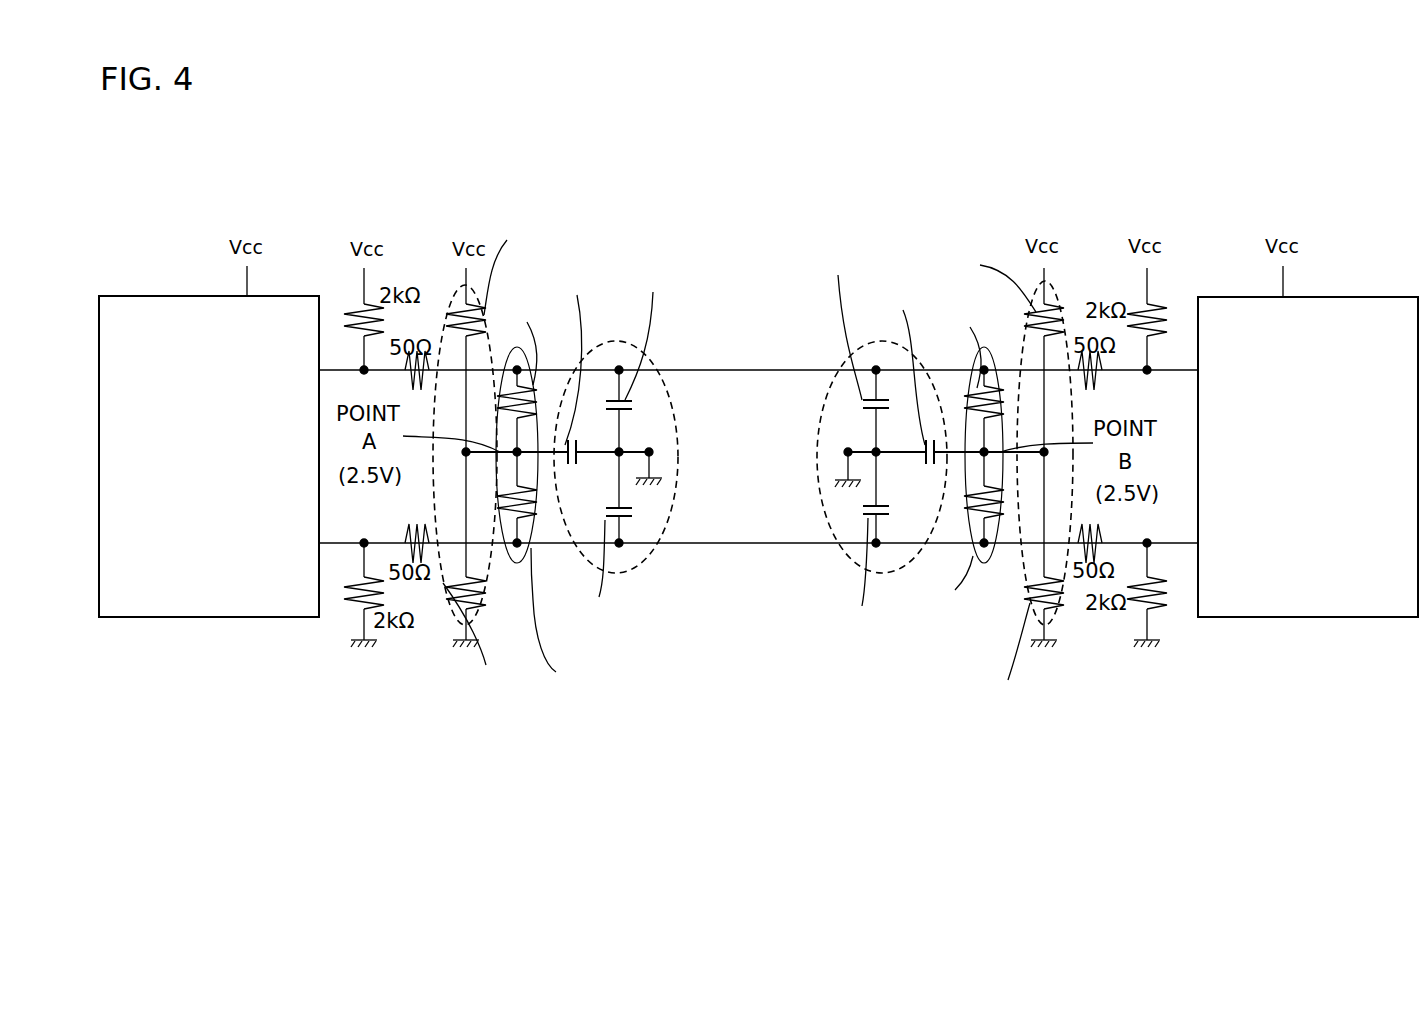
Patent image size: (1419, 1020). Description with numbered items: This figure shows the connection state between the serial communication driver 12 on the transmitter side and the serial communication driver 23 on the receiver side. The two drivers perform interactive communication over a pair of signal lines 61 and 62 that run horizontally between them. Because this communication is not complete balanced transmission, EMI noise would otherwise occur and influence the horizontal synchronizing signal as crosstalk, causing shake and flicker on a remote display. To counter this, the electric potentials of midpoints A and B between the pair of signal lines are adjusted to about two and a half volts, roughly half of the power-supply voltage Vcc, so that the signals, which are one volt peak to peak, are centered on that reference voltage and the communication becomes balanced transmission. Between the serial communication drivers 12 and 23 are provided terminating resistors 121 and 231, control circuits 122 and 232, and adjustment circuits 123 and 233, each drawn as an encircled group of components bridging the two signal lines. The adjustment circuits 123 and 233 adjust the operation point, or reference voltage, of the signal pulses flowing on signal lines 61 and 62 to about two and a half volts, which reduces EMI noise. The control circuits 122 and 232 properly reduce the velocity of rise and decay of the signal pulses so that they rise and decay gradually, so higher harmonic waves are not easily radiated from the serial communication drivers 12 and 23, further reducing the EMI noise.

The serial communication driver 12 is at (227, 617).
The serial communication driver 23 is at (1268, 617).
The signal line 61 is at (748, 370).
The signal line 62 is at (748, 543).
The terminating resistor 121 is at (513, 562).
The control circuit 122 is at (653, 548).
The adjustment circuit 123 is at (443, 585).
The terminating resistor 231 is at (983, 560).
The control circuit 232 is at (843, 555).
The adjustment circuit 233 is at (1067, 577).